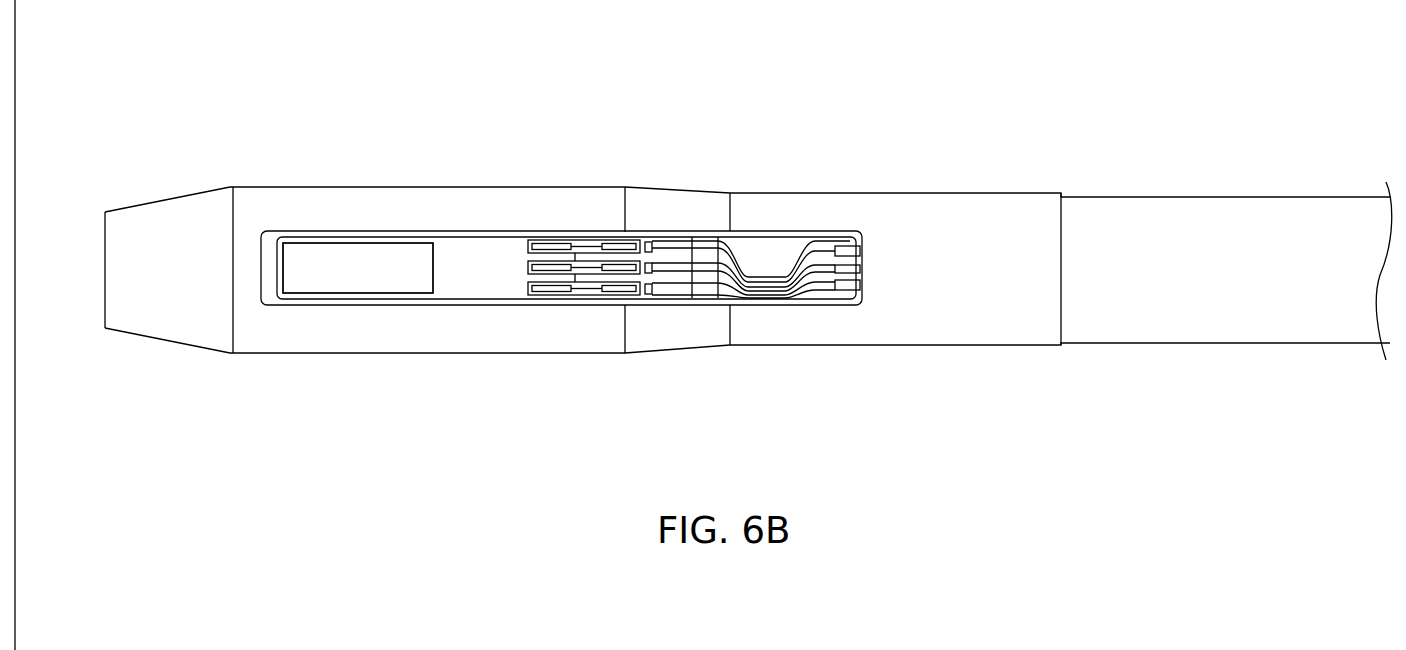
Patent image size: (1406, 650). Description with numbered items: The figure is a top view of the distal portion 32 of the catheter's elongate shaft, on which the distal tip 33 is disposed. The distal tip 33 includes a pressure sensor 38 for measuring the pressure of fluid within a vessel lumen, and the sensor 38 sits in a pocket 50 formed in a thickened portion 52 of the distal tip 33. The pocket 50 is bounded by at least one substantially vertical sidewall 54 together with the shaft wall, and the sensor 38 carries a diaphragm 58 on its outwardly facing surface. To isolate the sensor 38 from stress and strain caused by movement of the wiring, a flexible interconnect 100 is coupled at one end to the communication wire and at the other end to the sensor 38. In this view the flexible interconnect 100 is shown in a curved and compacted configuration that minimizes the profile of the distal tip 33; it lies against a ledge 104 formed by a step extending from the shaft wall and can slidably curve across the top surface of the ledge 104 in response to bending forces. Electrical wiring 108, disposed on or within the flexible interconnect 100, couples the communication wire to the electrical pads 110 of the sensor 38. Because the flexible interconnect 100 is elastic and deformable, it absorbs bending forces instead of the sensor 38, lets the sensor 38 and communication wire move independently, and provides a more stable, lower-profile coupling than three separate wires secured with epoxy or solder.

The distal portion 32 is at (990, 432).
The distal tip 33 is at (417, 124).
The pressure sensor 38 is at (470, 259).
The pocket 50 is at (271, 242).
The thickened portion 52 is at (564, 212).
The sidewall 54 is at (335, 306).
The diaphragm 58 is at (392, 268).
The flexible interconnect 100 is at (823, 238).
The ledge 104 is at (710, 238).
The electrical wiring 108 is at (820, 290).
The electrical pads 110 is at (652, 298).